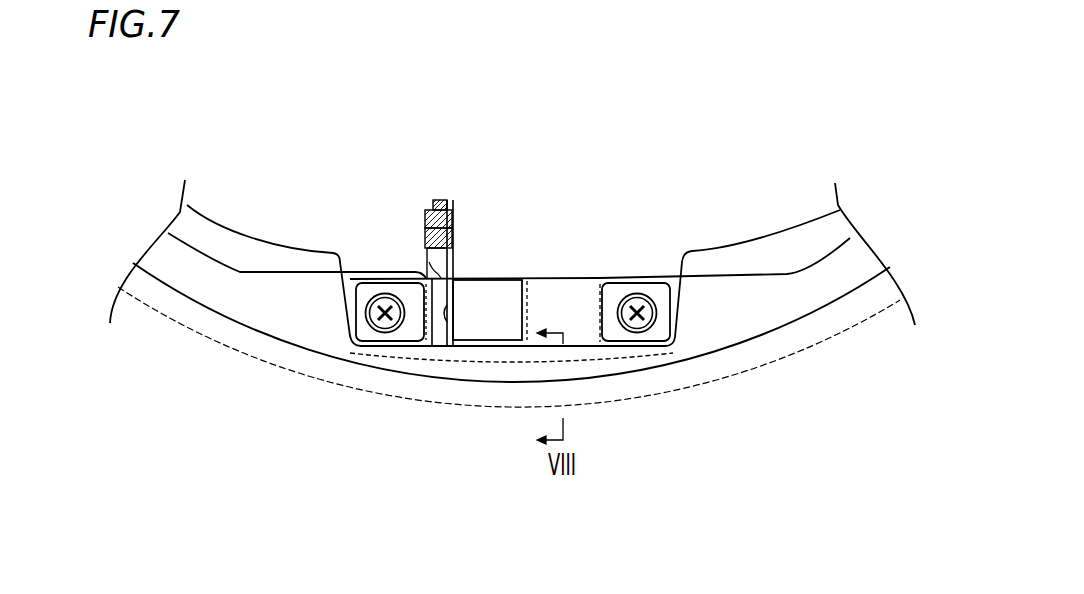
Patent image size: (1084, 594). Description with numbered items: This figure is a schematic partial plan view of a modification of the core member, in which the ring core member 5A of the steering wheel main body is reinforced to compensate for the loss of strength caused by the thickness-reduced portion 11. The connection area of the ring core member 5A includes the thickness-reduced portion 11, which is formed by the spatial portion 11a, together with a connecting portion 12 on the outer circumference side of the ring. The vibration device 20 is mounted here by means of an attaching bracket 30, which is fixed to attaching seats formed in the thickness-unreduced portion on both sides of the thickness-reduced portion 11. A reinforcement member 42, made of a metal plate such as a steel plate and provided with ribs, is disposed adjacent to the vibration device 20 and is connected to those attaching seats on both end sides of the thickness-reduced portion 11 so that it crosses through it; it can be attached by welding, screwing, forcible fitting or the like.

The ring core member 5A is at (862, 265).
The vibration device 20 is at (560, 269).
The attaching bracket 30 is at (538, 283).
The thickness-reduced portion 11 is at (471, 341).
The spatial portion 11a is at (437, 285).
The connecting portion 12 is at (402, 377).
The reinforcement member 42 is at (657, 366).